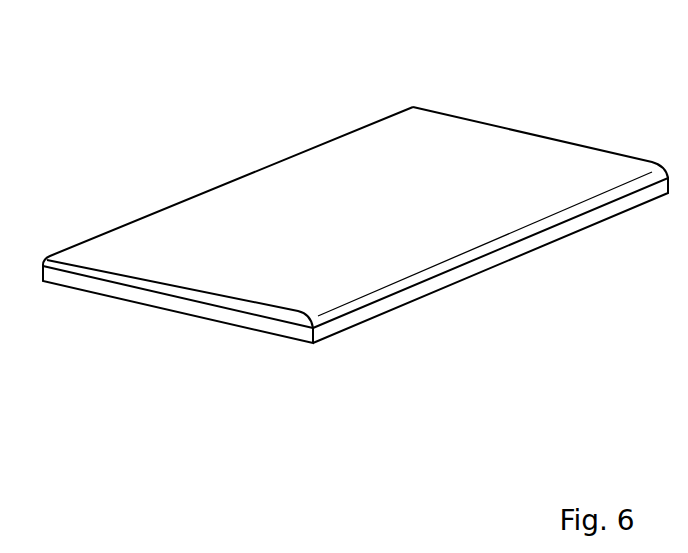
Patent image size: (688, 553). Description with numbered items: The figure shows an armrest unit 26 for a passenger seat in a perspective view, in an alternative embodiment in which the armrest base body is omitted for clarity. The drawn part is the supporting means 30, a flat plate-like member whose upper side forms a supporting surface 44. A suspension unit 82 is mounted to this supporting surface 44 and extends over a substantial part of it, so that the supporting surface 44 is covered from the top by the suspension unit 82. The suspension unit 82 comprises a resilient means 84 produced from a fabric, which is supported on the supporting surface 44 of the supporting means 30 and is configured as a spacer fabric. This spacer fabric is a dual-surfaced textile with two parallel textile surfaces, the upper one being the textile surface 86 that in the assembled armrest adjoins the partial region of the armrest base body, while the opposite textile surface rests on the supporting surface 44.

The armrest unit 26 is at (355, 252).
The supporting means 30 is at (283, 328).
The supporting surface 44 is at (100, 278).
The suspension unit 82 is at (318, 189).
The resilient means 84 is at (377, 283).
The textile surface 86 is at (487, 145).